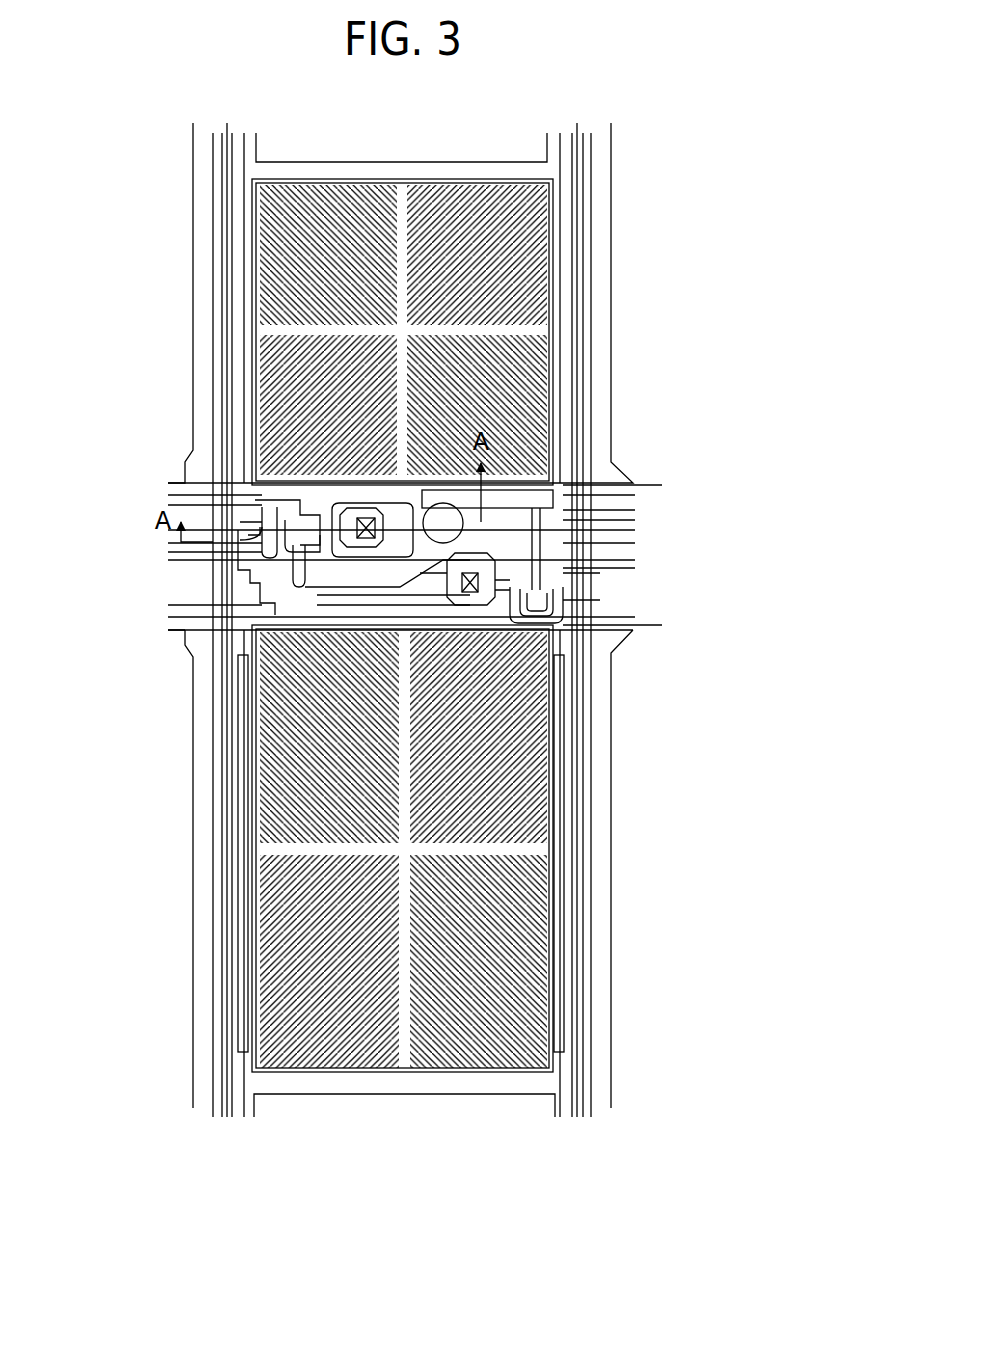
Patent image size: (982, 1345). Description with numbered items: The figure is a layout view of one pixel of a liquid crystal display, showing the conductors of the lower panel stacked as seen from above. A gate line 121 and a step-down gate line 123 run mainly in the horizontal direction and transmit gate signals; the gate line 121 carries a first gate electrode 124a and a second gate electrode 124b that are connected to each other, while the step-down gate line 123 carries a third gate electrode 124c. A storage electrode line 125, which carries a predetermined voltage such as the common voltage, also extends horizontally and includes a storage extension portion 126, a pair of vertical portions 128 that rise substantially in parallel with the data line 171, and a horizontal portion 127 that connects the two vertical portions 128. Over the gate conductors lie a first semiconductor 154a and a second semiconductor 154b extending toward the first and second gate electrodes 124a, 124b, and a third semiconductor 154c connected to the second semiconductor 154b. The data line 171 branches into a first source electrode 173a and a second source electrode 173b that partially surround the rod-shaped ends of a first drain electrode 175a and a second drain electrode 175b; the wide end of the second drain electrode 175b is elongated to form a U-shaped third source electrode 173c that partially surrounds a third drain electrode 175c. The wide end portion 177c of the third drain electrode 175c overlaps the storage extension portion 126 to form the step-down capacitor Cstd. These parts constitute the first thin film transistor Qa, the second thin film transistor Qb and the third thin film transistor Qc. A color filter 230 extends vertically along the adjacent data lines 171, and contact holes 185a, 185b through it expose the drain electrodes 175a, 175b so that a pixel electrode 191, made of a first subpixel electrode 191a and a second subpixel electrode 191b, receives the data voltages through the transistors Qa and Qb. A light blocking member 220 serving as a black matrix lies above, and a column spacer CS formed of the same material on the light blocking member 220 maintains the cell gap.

The horizontal portion 127 is at (508, 168).
The vertical portions 128 is at (563, 305).
The color filter 230 is at (193, 235).
The light blocking member 220 is at (580, 215).
The data line 171 is at (230, 272).
The pixel electrode 191 is at (504, 629).
The first subpixel electrode 191a is at (560, 357).
The second subpixel electrode 191b is at (560, 818).
The gate line 121 is at (617, 543).
The step-down gate line 123 is at (617, 618).
The storage electrode line 125 is at (600, 497).
The storage extension portion 126 is at (600, 520).
The wide end portion 177c is at (600, 477).
The step-down capacitor Cstd is at (508, 489).
The column spacer CS is at (445, 503).
The first thin film transistor Qa is at (243, 522).
The second thin film transistor Qb is at (278, 500).
The third thin film transistor Qc is at (542, 632).
The first gate electrode 124a is at (290, 565).
The second gate electrode 124b is at (306, 512).
The third gate electrode 124c is at (600, 597).
The first semiconductor 154a is at (270, 530).
The second semiconductor 154b is at (315, 600).
The third semiconductor 154c is at (550, 617).
The first source electrode 173a is at (285, 590).
The second source electrode 173b is at (292, 548).
The third source electrode 173c is at (600, 628).
The first drain electrode 175a is at (262, 521).
The second drain electrode 175b is at (300, 585).
The third drain electrode 175c is at (600, 573).
The contact hole 185a is at (366, 540).
The contact hole 185b is at (472, 596).